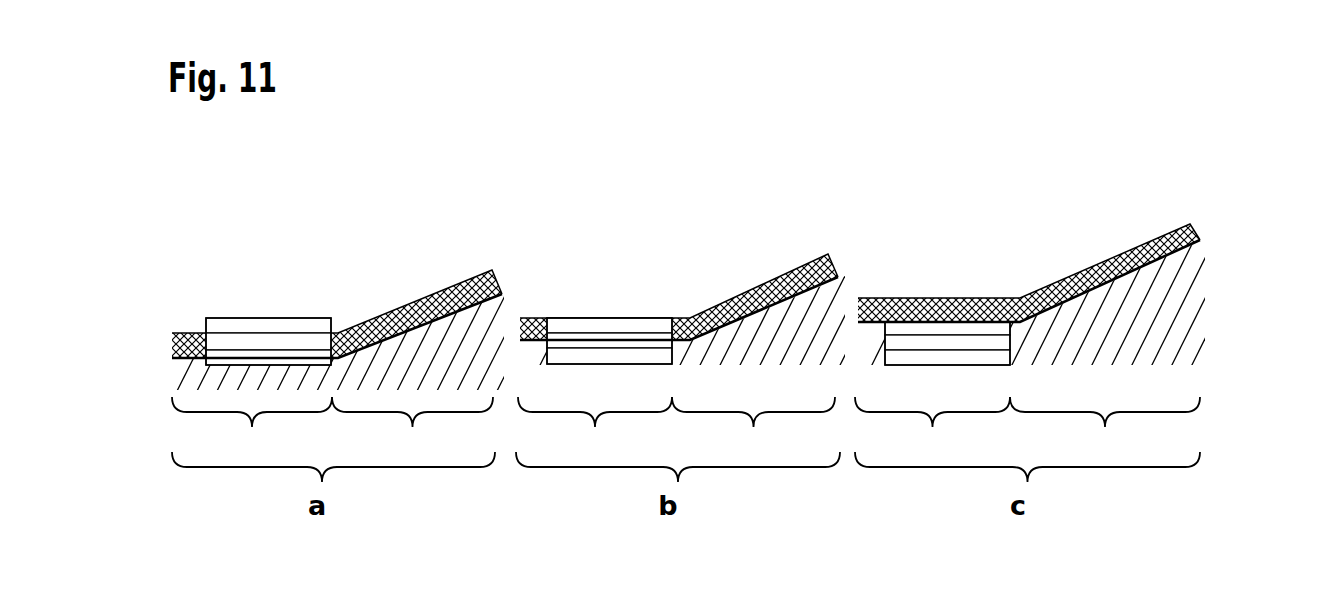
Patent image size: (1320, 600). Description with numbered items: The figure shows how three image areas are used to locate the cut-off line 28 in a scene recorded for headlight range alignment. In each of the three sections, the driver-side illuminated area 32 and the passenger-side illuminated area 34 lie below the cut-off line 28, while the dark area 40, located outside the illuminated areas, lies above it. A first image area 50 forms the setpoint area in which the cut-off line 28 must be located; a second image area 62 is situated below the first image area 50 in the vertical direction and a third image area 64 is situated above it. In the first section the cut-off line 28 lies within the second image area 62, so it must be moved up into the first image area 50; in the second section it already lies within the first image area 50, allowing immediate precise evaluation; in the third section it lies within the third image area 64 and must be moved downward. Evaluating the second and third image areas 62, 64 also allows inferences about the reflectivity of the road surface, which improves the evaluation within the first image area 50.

The cut-off line 28 is at (468, 314).
The driver-side illuminated area 32 is at (591, 428).
The passenger-side illuminated area 34 is at (766, 428).
The dark area 40 is at (460, 266).
The first image area 50 is at (272, 347).
The second image area 62 is at (232, 362).
The third image area 64 is at (302, 328).